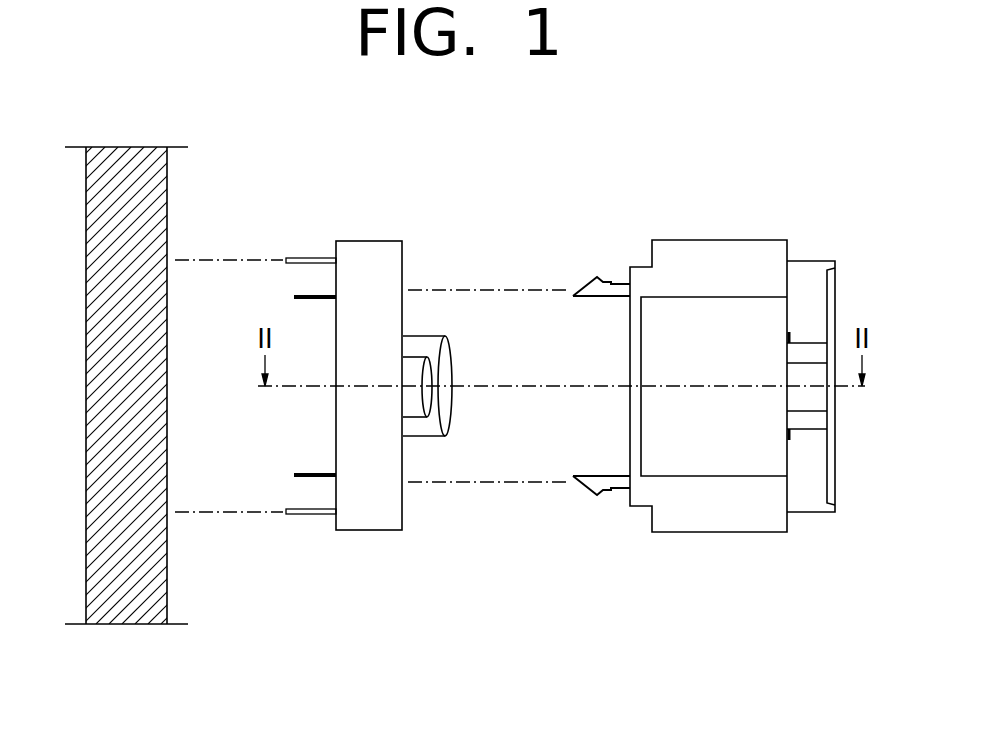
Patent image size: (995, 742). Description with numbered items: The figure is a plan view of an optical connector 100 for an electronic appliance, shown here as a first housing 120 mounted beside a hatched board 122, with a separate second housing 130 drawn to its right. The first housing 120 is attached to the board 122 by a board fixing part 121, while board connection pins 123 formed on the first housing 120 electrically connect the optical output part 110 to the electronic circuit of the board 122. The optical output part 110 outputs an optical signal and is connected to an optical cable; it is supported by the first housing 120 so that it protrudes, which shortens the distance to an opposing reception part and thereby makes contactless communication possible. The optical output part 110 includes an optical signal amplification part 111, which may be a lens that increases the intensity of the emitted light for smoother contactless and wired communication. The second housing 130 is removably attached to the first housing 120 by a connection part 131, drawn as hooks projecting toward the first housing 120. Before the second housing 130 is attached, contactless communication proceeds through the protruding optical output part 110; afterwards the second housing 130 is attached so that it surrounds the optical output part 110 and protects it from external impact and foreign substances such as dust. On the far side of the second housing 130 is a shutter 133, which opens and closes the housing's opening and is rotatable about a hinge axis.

The optical connector 100 is at (640, 139).
The optical output part 110 is at (415, 356).
The optical signal amplification part 111 is at (452, 352).
The first housing 120 is at (366, 241).
The board fixing part 121 is at (310, 516).
The board 122 is at (98, 473).
The board connection pins 123 is at (300, 478).
The second housing 130 is at (732, 242).
The connection part 131 is at (578, 475).
The shutter 133 is at (835, 462).